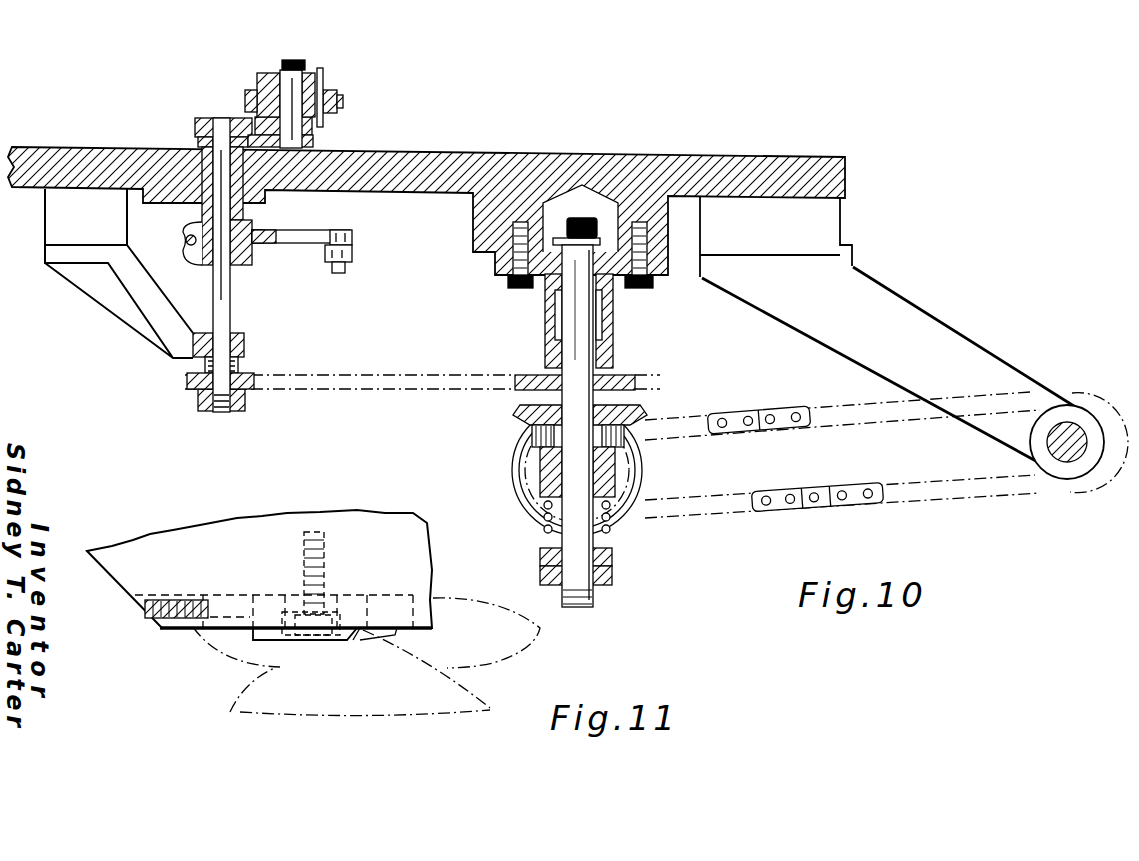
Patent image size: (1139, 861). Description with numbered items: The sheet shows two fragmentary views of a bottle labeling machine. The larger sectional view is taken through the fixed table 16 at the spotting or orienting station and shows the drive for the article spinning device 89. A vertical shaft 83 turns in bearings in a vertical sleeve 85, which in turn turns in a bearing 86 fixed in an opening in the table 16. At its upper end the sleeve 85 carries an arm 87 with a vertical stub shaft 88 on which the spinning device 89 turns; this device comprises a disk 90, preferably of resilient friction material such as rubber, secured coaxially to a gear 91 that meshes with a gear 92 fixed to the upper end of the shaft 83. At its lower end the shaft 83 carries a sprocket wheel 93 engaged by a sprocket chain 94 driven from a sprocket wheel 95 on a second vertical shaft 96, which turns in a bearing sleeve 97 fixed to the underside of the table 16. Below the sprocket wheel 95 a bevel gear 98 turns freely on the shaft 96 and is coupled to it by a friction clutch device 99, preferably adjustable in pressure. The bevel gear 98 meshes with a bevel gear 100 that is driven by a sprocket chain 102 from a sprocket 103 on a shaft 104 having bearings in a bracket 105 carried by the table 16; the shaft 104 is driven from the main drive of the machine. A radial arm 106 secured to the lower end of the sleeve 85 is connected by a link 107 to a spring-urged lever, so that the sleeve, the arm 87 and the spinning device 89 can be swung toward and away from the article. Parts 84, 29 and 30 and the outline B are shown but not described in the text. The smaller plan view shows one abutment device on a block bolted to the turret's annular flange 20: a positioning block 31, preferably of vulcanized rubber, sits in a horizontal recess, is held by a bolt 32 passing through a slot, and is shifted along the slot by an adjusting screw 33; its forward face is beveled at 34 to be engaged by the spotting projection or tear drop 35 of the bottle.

In FIG. 10, the table 16 is at (801, 168).
In FIG. 11, the annular flange 20 is at (187, 536).
In FIG. 11, the slot 29 is at (172, 627).
In FIG. 11, the recess 30 is at (410, 602).
In FIG. 11, the positioning block 31 is at (278, 640).
In FIG. 11, the bolt 32 is at (323, 567).
In FIG. 11, the adjusting screw 33 is at (185, 603).
In FIG. 11, the beveled forward face 34 is at (372, 633).
In FIG. 11, the spotting projection 35 is at (357, 642).
In FIG. 10, the vertical shaft 83 is at (222, 305).
In FIG. 10, the bracket 84 is at (166, 328).
In FIG. 10, the vertical sleeve 85 is at (235, 263).
In FIG. 10, the bearing 86 is at (203, 212).
In FIG. 10, the arm 87 is at (318, 146).
In FIG. 10, the vertical stub shaft 88 is at (292, 60).
In FIG. 10, the article spinning device 89 is at (361, 72).
In FIG. 10, the disk 90 is at (343, 100).
In FIG. 10, the gear 91 is at (255, 118).
In FIG. 10, the gear 92 is at (198, 122).
In FIG. 10, the sprocket wheel 93 is at (198, 385).
In FIG. 10, the sprocket chain 94 is at (357, 377).
In FIG. 10, the sprocket wheel 95 is at (620, 377).
In FIG. 10, the vertical shaft 96 is at (560, 523).
In FIG. 10, the bearing sleeve 97 is at (615, 327).
In FIG. 10, the bevel gear 98 is at (540, 413).
In FIG. 10, the friction clutch device 99 is at (557, 479).
In FIG. 10, the bevel gear 100 is at (630, 476).
In FIG. 10, the sprocket chain 102 is at (726, 508).
In FIG. 10, the sprocket 103 is at (1086, 396).
In FIG. 10, the shaft 104 is at (1073, 462).
In FIG. 10, the bracket 105 is at (960, 343).
In FIG. 10, the radial arm 106 is at (312, 224).
In FIG. 10, the link 107 is at (354, 260).
In FIG. 11, the hopper outline B is at (470, 695).